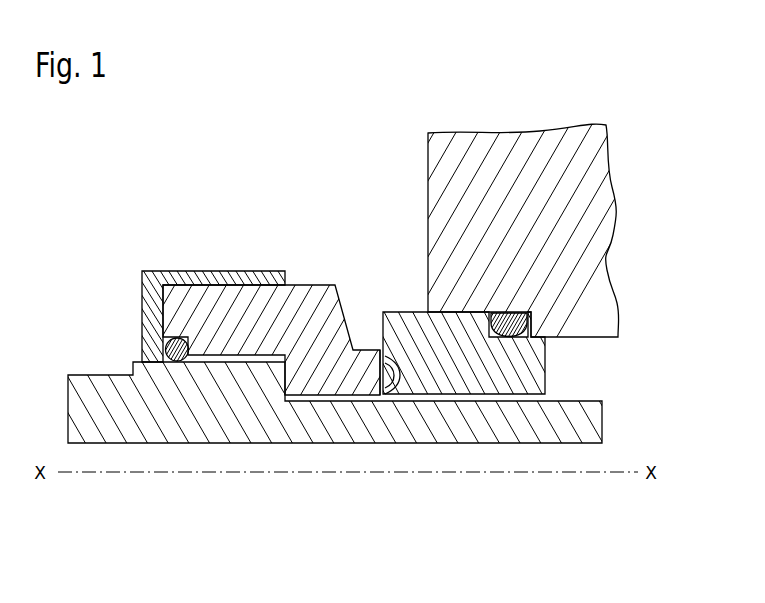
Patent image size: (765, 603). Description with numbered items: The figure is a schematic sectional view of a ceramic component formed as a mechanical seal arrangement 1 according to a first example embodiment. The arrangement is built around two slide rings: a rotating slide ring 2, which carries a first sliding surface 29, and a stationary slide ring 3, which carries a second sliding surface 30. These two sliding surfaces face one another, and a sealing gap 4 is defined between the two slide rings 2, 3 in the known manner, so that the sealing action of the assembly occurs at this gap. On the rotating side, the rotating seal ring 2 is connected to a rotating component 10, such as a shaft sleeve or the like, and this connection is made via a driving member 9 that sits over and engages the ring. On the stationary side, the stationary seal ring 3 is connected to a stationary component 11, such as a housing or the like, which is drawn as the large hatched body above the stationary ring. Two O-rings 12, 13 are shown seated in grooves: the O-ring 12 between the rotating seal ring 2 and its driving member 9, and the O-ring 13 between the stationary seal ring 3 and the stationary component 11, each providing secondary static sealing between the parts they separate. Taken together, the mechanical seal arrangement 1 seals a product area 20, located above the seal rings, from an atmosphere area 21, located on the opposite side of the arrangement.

The mechanical seal arrangement 1 is at (188, 158).
The rotating slide ring 2 is at (323, 370).
The stationary slide ring 3 is at (448, 365).
The sealing gap 4 is at (396, 376).
The driving member 9 is at (244, 283).
The rotating component 10 is at (96, 390).
The stationary component 11 is at (530, 142).
The O-ring 12 is at (178, 340).
The O-ring 13 is at (517, 324).
The product area 20 is at (332, 215).
The atmosphere area 21 is at (629, 392).
The first sliding surface 29 is at (385, 372).
The second sliding surface 30 is at (381, 360).